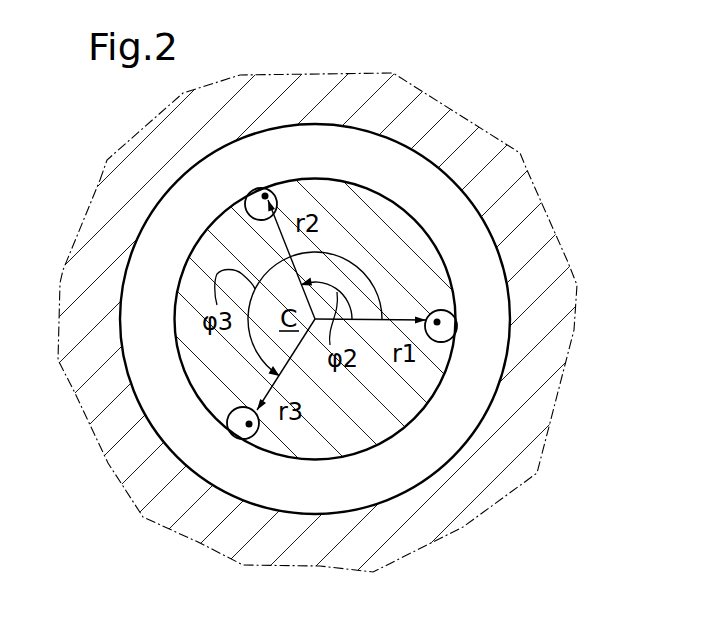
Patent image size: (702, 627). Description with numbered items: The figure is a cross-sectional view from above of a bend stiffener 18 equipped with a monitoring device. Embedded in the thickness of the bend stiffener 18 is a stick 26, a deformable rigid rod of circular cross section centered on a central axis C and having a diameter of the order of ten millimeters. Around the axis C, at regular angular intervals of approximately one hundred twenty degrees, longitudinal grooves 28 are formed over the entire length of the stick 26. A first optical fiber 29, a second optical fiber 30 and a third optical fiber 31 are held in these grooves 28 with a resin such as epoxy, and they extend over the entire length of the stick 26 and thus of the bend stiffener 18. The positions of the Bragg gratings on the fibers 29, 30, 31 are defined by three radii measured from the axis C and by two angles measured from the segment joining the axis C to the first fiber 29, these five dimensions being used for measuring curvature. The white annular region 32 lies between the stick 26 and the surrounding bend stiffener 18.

The bend stiffener 18 is at (515, 475).
The stick 26 is at (210, 250).
The longitudinal grooves 28 is at (450, 333).
The first optical fiber 29 is at (440, 322).
The second optical fiber 30 is at (265, 194).
The third optical fiber 31 is at (249, 424).
The annular gap 32 is at (398, 160).